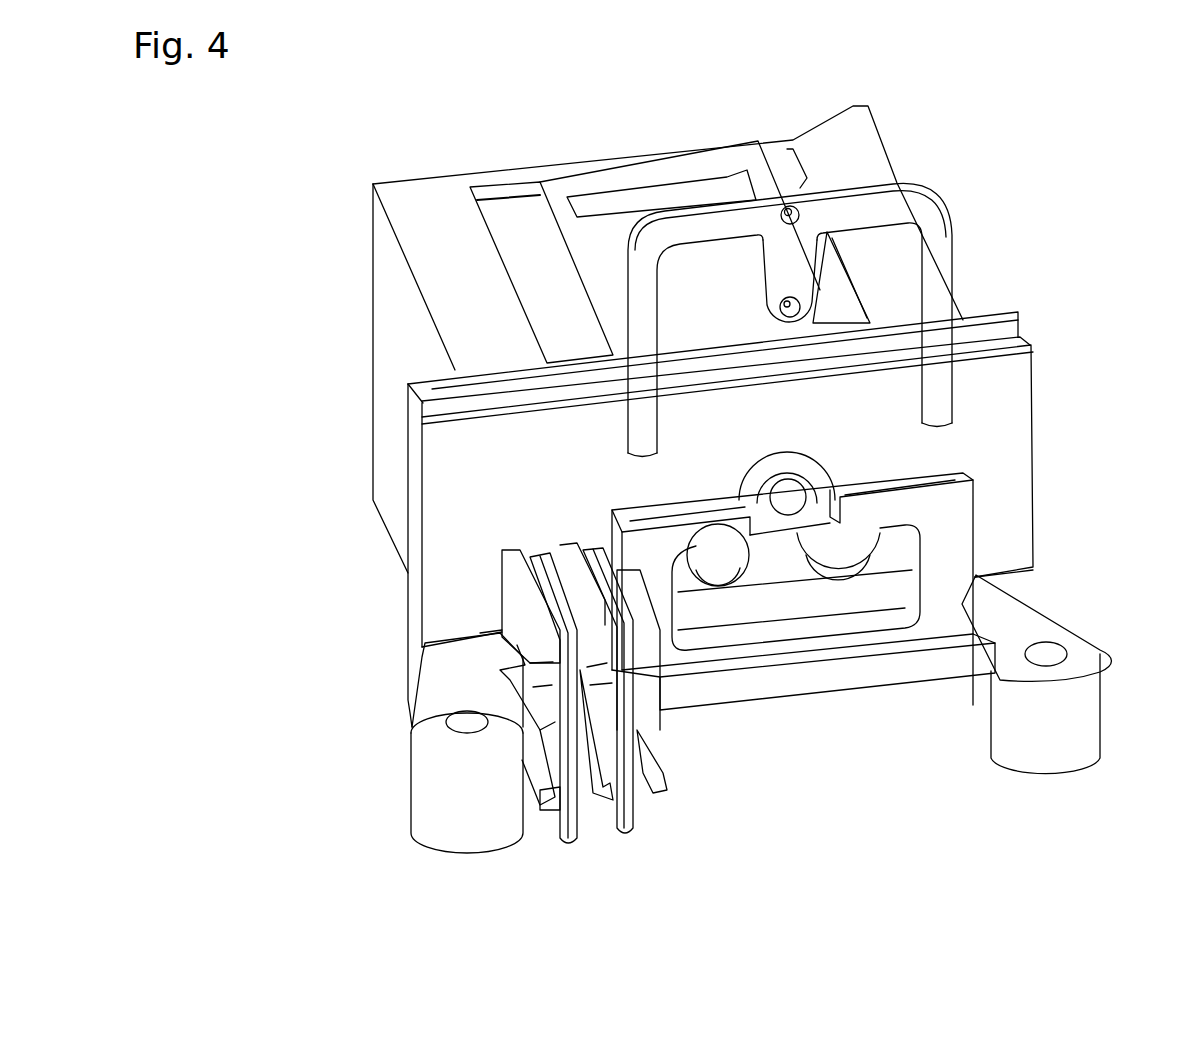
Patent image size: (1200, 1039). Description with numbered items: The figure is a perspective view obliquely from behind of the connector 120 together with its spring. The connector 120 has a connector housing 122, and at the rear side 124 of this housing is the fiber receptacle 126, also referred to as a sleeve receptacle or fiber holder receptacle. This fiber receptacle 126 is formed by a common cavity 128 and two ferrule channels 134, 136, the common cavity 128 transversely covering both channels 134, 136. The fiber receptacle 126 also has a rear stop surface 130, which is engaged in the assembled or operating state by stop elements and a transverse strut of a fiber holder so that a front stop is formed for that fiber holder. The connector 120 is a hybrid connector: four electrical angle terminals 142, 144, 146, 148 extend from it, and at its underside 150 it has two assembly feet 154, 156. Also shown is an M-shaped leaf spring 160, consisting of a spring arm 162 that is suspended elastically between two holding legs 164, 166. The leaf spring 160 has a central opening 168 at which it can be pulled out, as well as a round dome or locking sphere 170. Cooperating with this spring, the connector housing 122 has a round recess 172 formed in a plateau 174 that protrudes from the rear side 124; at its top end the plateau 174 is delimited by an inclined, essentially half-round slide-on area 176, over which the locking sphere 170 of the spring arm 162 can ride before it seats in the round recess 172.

The connector 120 is at (1036, 415).
The connector housing 122 is at (1016, 460).
The rear side 124 is at (1016, 523).
The fiber receptacle 126 is at (880, 597).
The common cavity 128 is at (803, 600).
The rear stop surface 130 is at (770, 560).
The ferrule channel 134 is at (710, 547).
The ferrule channel 136 is at (827, 527).
The electrical angle terminal 142 is at (553, 740).
The electrical angle terminal 144 is at (572, 845).
The electrical angle terminal 146 is at (615, 737).
The electrical angle terminal 148 is at (633, 832).
The underside 150 is at (943, 683).
The assembly foot 154 is at (445, 815).
The assembly foot 156 is at (1072, 745).
The leaf spring 160 is at (955, 233).
The spring arm 162 is at (778, 283).
The holding leg 164 is at (635, 428).
The holding leg 166 is at (937, 397).
The central opening 168 is at (790, 206).
The locking sphere 170 is at (786, 317).
The round recess 172 is at (796, 490).
The plateau 174 is at (758, 497).
The slide-on area 176 is at (781, 462).